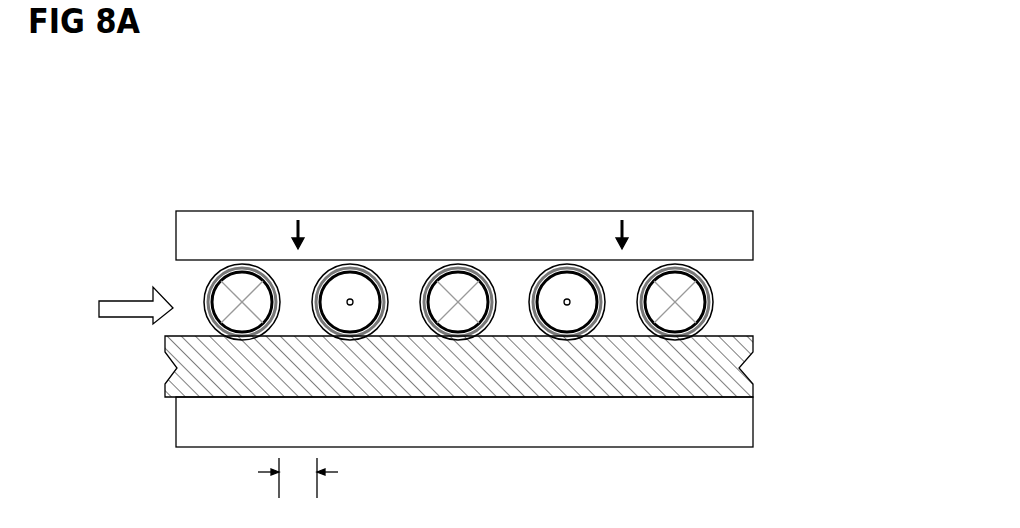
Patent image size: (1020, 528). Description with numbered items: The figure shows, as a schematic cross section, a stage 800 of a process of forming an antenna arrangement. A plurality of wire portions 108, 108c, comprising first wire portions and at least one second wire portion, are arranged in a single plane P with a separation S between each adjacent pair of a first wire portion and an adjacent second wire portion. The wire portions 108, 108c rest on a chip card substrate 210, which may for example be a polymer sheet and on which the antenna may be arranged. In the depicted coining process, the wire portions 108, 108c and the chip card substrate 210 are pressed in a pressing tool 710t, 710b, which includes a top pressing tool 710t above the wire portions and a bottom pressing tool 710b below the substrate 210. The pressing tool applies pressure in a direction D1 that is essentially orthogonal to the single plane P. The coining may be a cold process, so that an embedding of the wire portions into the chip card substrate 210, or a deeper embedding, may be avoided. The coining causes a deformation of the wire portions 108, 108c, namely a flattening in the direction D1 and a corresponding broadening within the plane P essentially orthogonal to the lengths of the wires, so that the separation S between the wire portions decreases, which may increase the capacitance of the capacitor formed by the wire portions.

The stage of a process of forming an antenna arrangement 800 is at (793, 78).
The top pressing tool 710t is at (330, 228).
The bottom pressing tool 710b is at (670, 432).
The wire portions 108 is at (549, 233).
The coated pipe 108c is at (800, 305).
The chip card substrate 210 is at (653, 383).
The direction D1 is at (622, 222).
The separation S is at (315, 478).
The single plane P is at (119, 305).